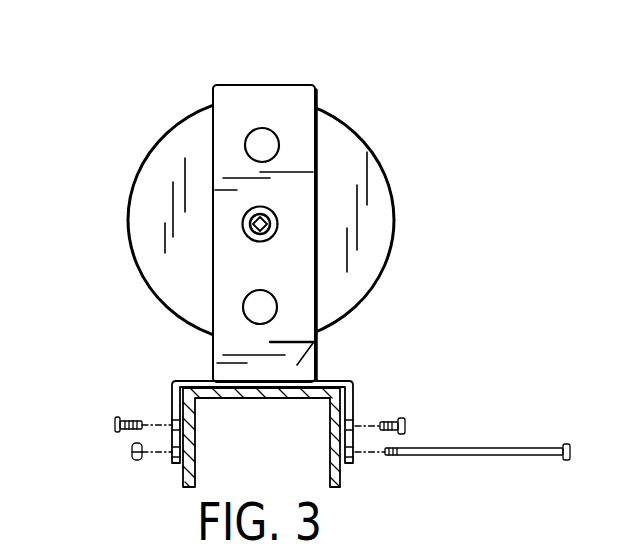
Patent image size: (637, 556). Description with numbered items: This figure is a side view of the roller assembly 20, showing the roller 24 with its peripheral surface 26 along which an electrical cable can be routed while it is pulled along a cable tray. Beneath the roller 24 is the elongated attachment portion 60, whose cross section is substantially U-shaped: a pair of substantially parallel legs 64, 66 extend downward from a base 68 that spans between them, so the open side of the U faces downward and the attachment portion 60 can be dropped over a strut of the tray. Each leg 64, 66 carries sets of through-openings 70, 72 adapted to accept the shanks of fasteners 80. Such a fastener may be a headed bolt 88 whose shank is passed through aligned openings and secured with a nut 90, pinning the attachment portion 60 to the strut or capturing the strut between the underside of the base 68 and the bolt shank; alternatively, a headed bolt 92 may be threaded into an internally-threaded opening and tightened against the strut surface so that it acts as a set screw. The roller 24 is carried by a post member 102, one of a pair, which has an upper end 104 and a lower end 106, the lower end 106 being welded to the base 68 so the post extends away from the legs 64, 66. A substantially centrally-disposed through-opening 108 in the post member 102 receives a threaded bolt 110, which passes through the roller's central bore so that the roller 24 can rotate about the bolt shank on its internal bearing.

The roller assembly 20 is at (365, 119).
The roller 24 is at (386, 172).
The peripheral surface 26 is at (129, 214).
The attachment portion 60 is at (354, 382).
The leg 64 is at (175, 462).
The leg 66 is at (342, 488).
The base 68 is at (317, 333).
The through-openings 70 is at (172, 449).
The through-openings 72 is at (173, 381).
The fasteners 80 is at (546, 448).
The headed bolt 88 is at (517, 456).
The nut 90 is at (135, 462).
The headed bolt 92 is at (133, 418).
The post member 102 is at (318, 116).
The end 104 is at (278, 85).
The end 106 is at (207, 343).
The through-opening 108 is at (264, 208).
The threaded bolt 110 is at (277, 227).